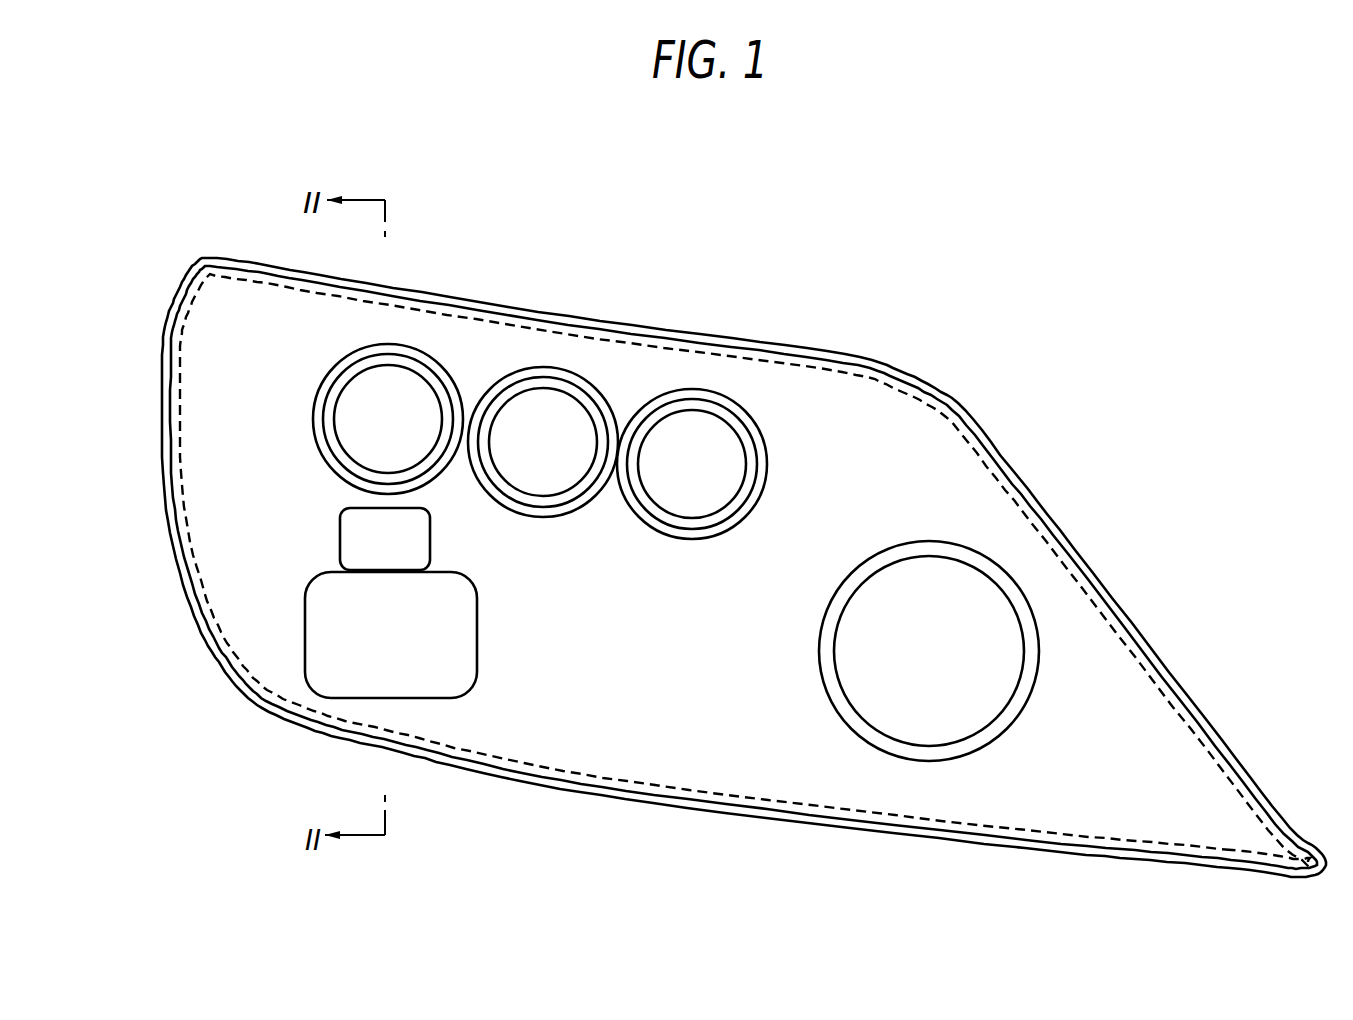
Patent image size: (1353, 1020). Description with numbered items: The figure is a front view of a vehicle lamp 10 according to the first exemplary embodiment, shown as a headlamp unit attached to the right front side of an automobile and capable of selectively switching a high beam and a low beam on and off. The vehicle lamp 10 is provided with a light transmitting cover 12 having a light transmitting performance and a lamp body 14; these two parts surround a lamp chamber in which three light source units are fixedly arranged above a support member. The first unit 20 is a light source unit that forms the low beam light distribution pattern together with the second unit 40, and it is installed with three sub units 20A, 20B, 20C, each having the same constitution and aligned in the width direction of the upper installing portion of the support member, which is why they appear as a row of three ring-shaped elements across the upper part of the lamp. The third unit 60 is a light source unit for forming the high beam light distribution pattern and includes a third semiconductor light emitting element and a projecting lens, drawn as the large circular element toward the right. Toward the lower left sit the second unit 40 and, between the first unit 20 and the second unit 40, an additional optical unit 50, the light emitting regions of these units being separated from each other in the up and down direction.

The vehicle lamp 10 is at (1028, 360).
The light transmitting cover 12 is at (1154, 653).
The lamp body 14 is at (653, 803).
The first unit 20 is at (807, 237).
The sub unit 20A is at (404, 378).
The sub unit 20B is at (546, 398).
The sub unit 20C is at (698, 418).
The second unit 40 is at (329, 630).
The additional optical unit 50 is at (339, 522).
The third unit 60 is at (983, 600).